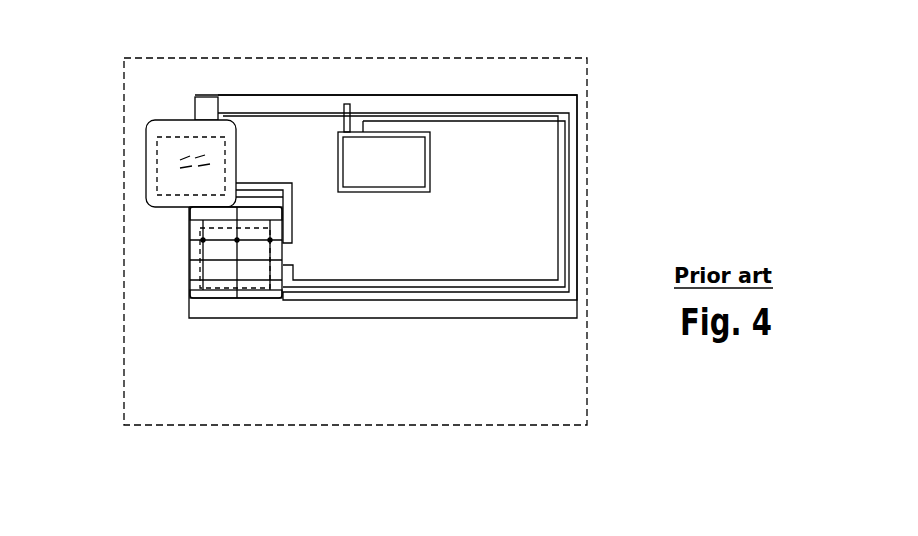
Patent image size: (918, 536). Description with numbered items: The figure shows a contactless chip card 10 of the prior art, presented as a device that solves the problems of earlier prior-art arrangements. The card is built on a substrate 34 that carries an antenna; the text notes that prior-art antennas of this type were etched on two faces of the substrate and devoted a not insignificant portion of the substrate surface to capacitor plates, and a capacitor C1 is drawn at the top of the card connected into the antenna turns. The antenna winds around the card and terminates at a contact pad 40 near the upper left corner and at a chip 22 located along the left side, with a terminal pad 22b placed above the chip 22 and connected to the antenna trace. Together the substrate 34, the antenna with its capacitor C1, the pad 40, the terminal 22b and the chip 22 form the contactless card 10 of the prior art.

The RFID transponder / tag 10 is at (590, 253).
The substrate with antenna coil 34 is at (517, 318).
The capacitor C1 is at (392, 156).
The contact pad 40 is at (209, 110).
The terminal pad 22b is at (146, 158).
The chip 22 is at (257, 300).